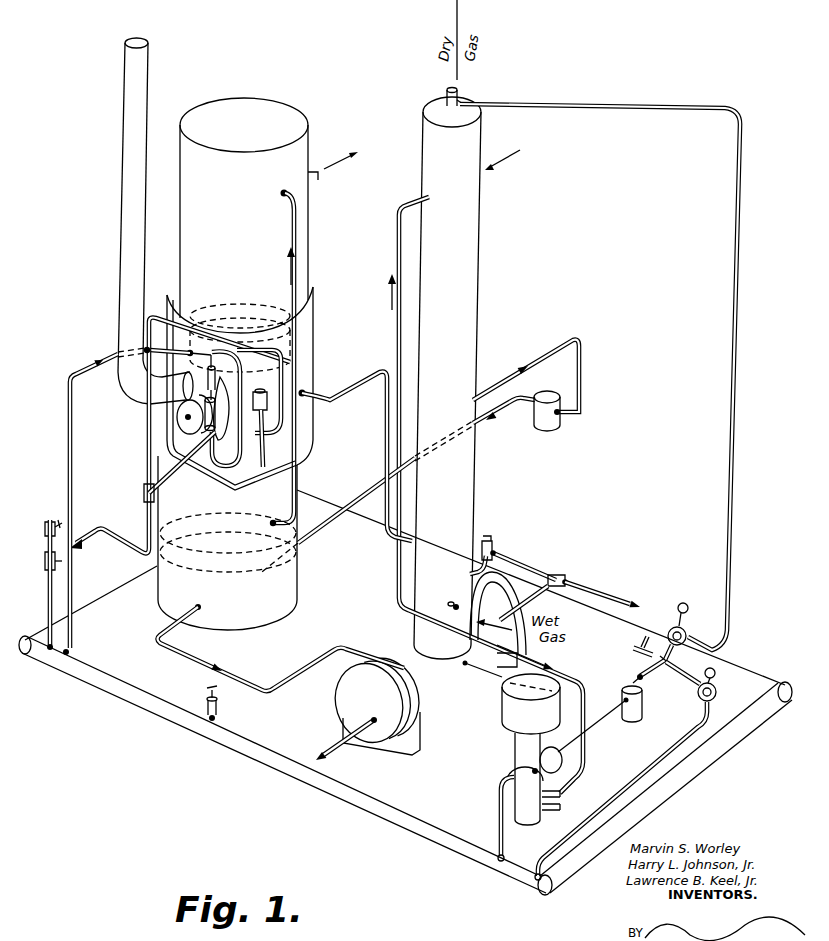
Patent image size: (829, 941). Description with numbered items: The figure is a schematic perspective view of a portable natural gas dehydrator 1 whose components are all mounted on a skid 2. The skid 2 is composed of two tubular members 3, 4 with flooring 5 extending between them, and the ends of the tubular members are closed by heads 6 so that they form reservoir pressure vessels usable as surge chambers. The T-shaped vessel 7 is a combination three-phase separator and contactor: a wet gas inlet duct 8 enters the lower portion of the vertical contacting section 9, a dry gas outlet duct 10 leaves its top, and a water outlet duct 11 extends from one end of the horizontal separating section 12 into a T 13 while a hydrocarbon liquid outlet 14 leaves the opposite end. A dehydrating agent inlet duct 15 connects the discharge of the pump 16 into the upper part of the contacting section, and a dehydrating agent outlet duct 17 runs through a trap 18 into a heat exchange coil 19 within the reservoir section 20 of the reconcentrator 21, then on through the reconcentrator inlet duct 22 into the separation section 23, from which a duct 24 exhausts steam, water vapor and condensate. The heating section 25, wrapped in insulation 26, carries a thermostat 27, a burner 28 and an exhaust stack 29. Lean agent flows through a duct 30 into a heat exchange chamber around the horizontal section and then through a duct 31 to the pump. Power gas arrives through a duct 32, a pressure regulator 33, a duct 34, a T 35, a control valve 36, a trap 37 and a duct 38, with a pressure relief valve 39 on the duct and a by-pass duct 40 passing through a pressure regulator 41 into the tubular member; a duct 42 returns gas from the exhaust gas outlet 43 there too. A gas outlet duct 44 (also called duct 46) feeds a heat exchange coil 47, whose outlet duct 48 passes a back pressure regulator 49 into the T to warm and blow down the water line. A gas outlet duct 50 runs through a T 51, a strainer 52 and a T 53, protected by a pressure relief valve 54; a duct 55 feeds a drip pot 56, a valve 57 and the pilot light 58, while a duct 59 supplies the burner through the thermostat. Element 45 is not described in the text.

The natural gas dehydrator 1 is at (509, 154).
The skid 2 is at (262, 758).
The tubular member 3 is at (745, 708).
The tubular member 4 is at (482, 882).
The flooring 5 is at (675, 794).
The heads 6 is at (35, 655).
The vessel 7 is at (481, 130).
The wet gas inlet duct 8 is at (455, 606).
The vertical contacting section 9 is at (478, 190).
The dry gas outlet duct 10 is at (460, 98).
The water outlet duct 11 is at (596, 593).
The horizontal separating section 12 is at (428, 730).
The T 13 is at (566, 578).
The hydrocarbon liquid outlet 14 is at (340, 748).
The dehydrating agent inlet duct 15 is at (396, 262).
The pump 16 is at (505, 710).
The dehydrating agent outlet duct 17 is at (553, 345).
The trap 18 is at (562, 420).
The heat exchange coil 19 is at (290, 566).
The reservoir section 20 is at (172, 592).
The reconcentrator 21 is at (247, 104).
The reconcentrator inlet duct 22 is at (300, 486).
The separation section 23 is at (298, 237).
The duct 24 is at (318, 172).
The heating section 25 is at (306, 436).
The insulation 26 is at (310, 290).
The thermostat 27 is at (261, 391).
The burner 28 is at (186, 417).
The exhaust stack 29 is at (148, 43).
The duct 30 is at (290, 682).
The duct 31 is at (592, 706).
The duct 32 is at (730, 608).
The pressure regulator 33 is at (678, 610).
The duct 34 is at (686, 645).
The T 35 is at (662, 668).
The control valve 36 is at (637, 675).
The trap 37 is at (645, 708).
The duct 38 is at (588, 722).
The pressure relief valve 39 is at (633, 648).
The by-pass duct 40 is at (690, 685).
The pressure regulator 41 is at (718, 688).
The duct 42 is at (499, 815).
The exhaust gas outlet 43 is at (510, 777).
The gas outlet duct 44 is at (216, 717).
The drain valve 45 is at (218, 708).
The duct 46 is at (72, 640).
The heat exchange coil 47 is at (242, 304).
The duct 48 is at (358, 385).
The back pressure regulator 49 is at (490, 542).
The gas outlet duct 50 is at (48, 608).
The T 51 is at (45, 561).
The strainer 52 is at (95, 531).
The T 53 is at (144, 490).
The pressure relief valve 54 is at (50, 520).
The duct 55 is at (160, 494).
The drip pot 56 is at (205, 430).
The valve 57 is at (182, 375).
The pilot light 58 is at (230, 426).
The duct 59 is at (226, 468).